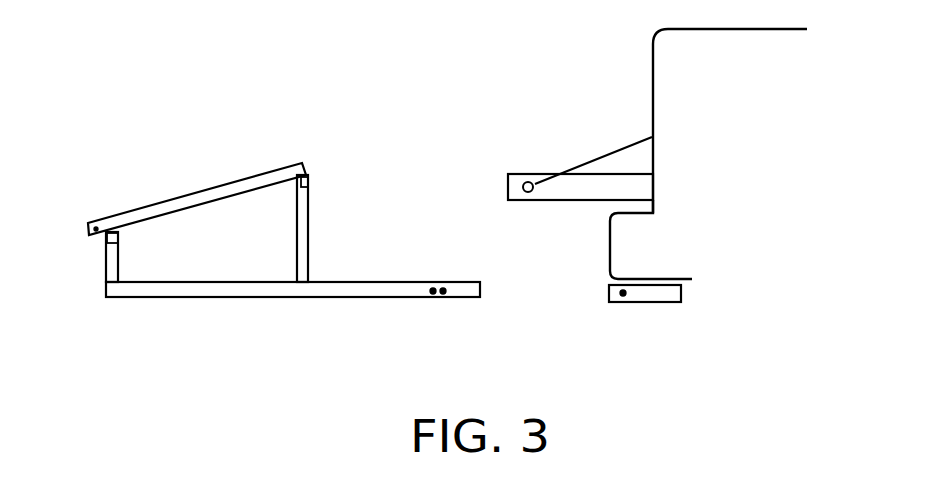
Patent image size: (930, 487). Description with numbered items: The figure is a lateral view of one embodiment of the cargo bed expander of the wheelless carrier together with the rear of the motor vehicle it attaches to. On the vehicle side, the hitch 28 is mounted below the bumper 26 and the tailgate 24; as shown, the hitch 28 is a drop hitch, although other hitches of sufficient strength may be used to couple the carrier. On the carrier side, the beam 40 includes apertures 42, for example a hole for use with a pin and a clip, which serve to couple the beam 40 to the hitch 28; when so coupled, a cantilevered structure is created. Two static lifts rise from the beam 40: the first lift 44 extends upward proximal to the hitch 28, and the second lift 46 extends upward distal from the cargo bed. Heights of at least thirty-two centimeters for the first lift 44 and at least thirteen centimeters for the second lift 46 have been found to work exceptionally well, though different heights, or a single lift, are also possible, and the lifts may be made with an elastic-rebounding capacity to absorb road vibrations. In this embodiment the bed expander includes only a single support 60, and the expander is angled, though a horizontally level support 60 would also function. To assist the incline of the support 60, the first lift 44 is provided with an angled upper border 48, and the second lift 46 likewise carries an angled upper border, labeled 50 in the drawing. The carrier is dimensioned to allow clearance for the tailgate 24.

The tailgate 24 is at (515, 177).
The bumper 26 is at (638, 252).
The hitch 28 is at (635, 297).
The beam 40 is at (150, 292).
The apertures 42 is at (443, 297).
The first lift 44 is at (305, 258).
The second lift 46 is at (117, 270).
The angled upper border 48 is at (309, 180).
The front post cap 50 is at (107, 240).
The support 60 is at (168, 208).